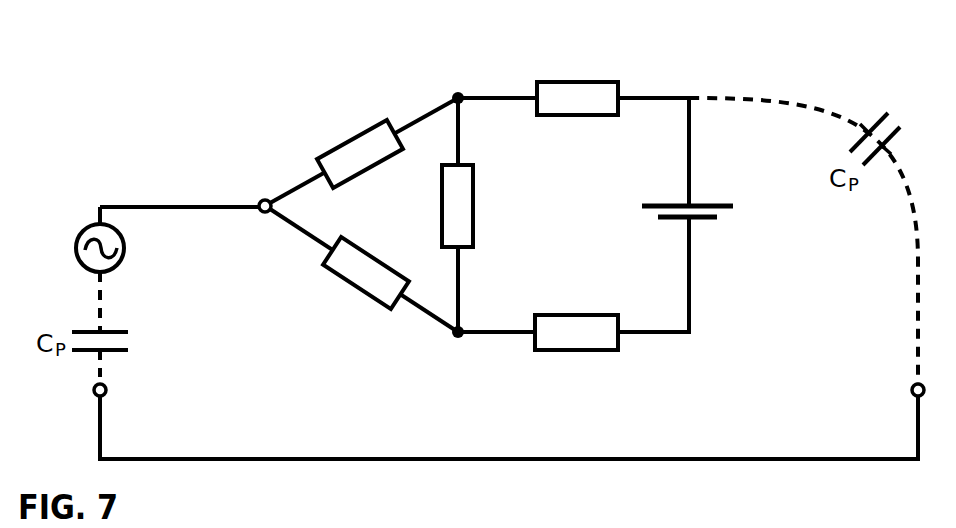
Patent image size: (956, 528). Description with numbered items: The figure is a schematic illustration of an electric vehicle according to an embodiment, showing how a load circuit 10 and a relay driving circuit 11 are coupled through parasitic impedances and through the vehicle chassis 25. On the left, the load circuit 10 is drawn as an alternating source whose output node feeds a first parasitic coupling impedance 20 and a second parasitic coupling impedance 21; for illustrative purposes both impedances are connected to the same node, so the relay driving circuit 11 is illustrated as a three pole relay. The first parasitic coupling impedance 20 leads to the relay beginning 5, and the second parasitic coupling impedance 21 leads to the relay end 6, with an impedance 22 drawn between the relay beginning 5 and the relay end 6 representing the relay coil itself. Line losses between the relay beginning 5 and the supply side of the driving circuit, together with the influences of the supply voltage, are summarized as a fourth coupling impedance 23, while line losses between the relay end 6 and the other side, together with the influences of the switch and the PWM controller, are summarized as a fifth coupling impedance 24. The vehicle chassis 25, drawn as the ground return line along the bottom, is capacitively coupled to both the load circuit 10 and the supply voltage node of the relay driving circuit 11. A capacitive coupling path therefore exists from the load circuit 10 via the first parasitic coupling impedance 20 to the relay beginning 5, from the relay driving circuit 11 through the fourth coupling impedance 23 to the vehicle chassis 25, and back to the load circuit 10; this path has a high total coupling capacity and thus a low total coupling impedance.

The relay beginning 5 is at (462, 95).
The relay end 6 is at (462, 337).
The load circuit 10 is at (145, 207).
The relay driving circuit 11 is at (690, 160).
The first parasitic coupling impedance 20 is at (375, 125).
The second parasitic coupling impedance 21 is at (378, 312).
The power supply impedance ZPS 22 is at (473, 172).
The fourth coupling impedance 23 is at (608, 82).
The fifth coupling impedance 24 is at (618, 340).
The vehicle chassis 25 is at (208, 459).